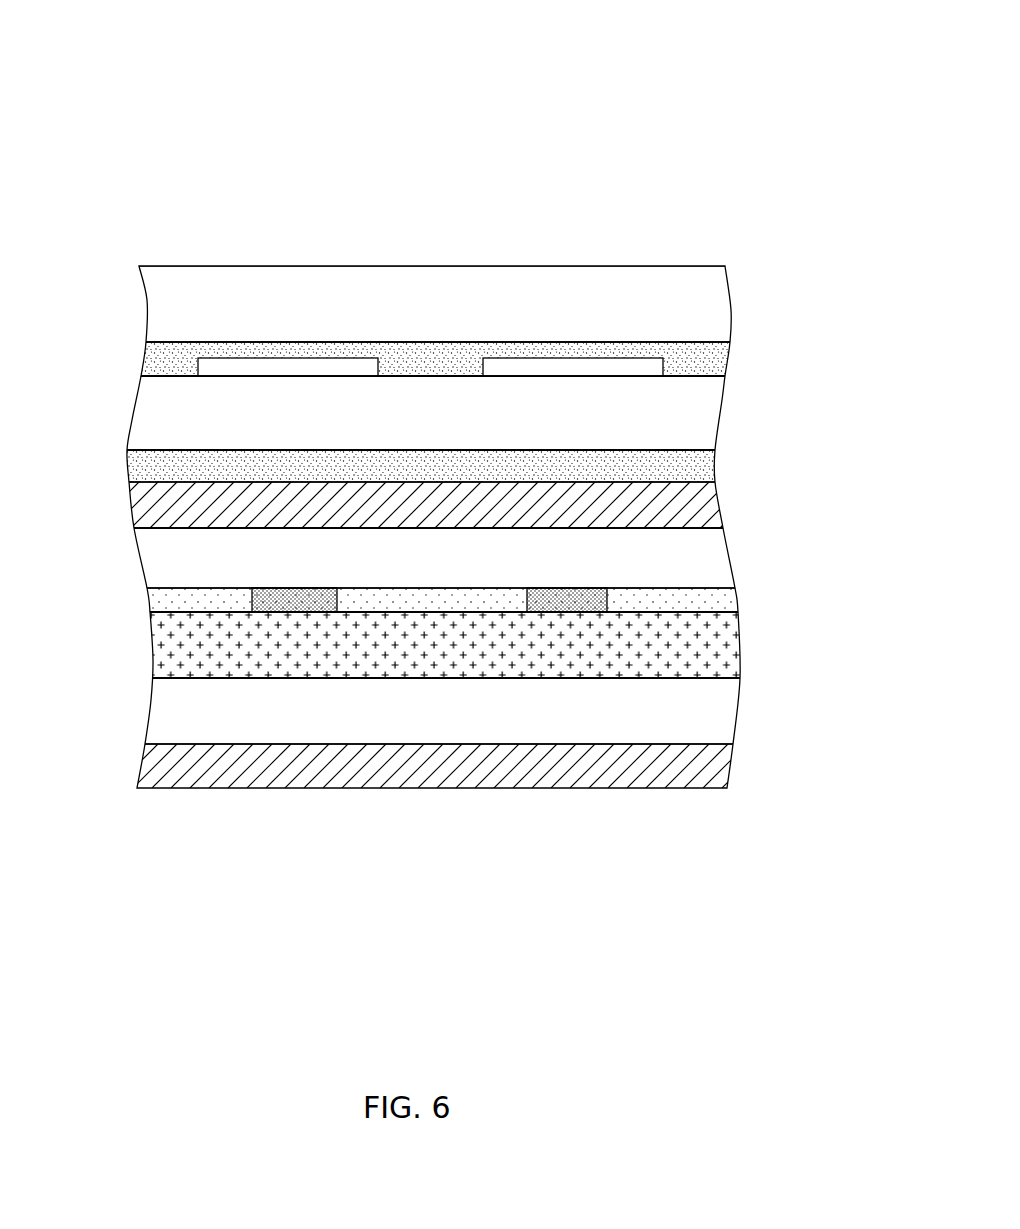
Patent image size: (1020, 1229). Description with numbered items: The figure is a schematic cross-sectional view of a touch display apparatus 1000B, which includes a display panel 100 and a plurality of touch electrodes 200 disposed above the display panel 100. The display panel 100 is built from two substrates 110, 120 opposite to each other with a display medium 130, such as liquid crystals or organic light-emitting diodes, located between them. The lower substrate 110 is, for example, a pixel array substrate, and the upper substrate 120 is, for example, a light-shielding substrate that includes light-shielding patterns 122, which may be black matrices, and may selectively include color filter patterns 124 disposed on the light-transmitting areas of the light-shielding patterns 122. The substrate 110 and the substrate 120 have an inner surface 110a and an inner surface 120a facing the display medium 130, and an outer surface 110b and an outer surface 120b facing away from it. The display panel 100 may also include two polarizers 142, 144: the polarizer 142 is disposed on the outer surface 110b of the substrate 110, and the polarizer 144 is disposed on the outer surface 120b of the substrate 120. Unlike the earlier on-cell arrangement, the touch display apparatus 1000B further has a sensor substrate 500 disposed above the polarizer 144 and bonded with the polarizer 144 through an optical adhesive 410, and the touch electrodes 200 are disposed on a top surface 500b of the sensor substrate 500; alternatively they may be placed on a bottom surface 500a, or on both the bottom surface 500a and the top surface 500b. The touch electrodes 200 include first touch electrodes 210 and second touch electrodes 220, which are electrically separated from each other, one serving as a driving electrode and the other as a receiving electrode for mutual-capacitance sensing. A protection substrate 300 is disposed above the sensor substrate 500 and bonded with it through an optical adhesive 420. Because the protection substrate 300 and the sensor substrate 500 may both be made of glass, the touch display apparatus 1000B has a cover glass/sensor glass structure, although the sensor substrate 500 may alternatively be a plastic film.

The display panel 100 is at (441, 429).
The substrate 110 is at (434, 715).
The inner surface 110a is at (177, 675).
The outer surface 110b is at (118, 775).
The substrate 120 is at (425, 674).
The inner surface 120a is at (118, 625).
The outer surface 120b is at (162, 522).
The light-shielding patterns 122 is at (298, 816).
The color filter patterns 124 is at (168, 597).
The display medium 130 is at (757, 682).
The polarizer 142 is at (455, 766).
The polarizer 144 is at (790, 483).
The touch electrodes 200 is at (430, 290).
The first touch electrodes 210 is at (570, 368).
The second touch electrodes 220 is at (255, 368).
The protection substrate 300 is at (790, 300).
The optical adhesive 410 is at (790, 442).
The optical adhesive 420 is at (790, 345).
The sensor substrate 500 is at (790, 405).
The bottom surface 500a is at (152, 452).
The top surface 500b is at (162, 373).
The touch display apparatus 1000B is at (836, 910).